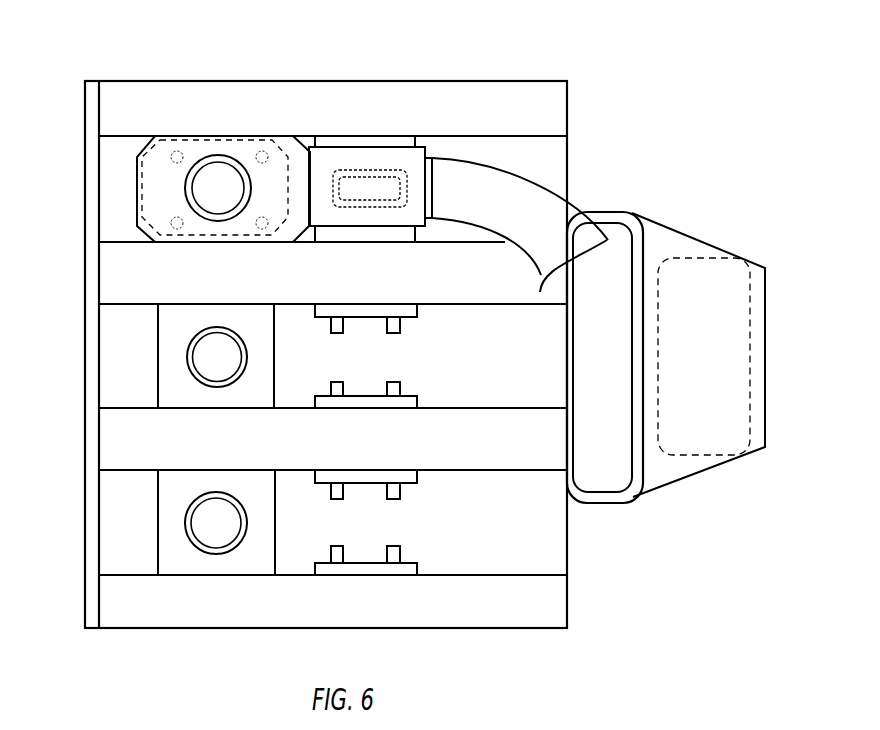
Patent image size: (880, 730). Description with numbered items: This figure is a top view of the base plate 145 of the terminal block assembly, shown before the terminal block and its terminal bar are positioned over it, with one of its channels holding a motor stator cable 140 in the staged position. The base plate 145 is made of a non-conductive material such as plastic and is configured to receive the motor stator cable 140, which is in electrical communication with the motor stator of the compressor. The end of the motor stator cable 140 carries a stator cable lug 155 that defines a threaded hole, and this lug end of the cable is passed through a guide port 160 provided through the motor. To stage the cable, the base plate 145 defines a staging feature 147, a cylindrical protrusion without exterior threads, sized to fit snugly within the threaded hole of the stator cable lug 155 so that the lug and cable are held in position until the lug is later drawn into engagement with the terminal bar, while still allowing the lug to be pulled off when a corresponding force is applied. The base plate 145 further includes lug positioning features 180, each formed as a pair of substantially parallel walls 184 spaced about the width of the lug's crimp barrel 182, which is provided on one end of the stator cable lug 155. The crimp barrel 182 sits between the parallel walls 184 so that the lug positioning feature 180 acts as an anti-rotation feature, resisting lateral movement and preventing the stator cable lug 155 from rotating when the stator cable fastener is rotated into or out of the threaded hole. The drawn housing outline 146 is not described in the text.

The motor stator cable 140 is at (532, 218).
The base plate 145 is at (223, 80).
The housing 146 is at (82, 602).
The staging feature 147 is at (187, 197).
The stator cable lug 155 is at (158, 167).
The guide port 160 is at (668, 227).
The lug positioning feature 180 is at (407, 338).
The crimp barrel 182 is at (343, 158).
The parallel walls 184 is at (393, 237).